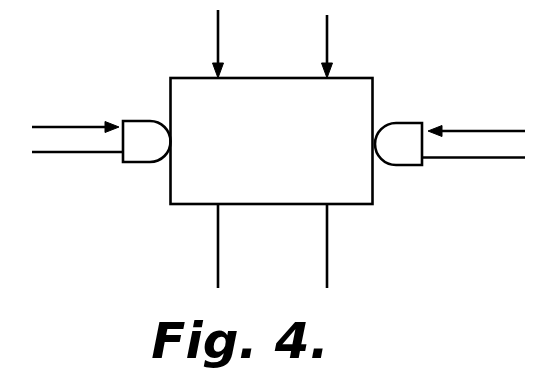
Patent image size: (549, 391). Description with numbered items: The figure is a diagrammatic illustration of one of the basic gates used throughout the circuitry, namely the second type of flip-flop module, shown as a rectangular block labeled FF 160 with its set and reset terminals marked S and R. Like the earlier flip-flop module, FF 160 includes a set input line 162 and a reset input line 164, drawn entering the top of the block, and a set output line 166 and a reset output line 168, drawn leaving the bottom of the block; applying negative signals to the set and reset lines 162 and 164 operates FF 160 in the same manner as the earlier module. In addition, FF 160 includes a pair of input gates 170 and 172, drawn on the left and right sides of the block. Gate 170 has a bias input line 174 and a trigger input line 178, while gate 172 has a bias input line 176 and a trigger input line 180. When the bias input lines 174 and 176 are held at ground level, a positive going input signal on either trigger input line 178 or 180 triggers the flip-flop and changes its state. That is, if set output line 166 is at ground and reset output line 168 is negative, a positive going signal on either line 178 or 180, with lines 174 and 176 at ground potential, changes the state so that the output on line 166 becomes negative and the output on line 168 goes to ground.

The flip-flop module 160 is at (283, 194).
The set input line 162 is at (216, 31).
The reset input line 164 is at (329, 36).
The set output line 166 is at (216, 242).
The reset output line 168 is at (329, 244).
The input gate 170 is at (141, 130).
The input gate 172 is at (402, 126).
The bias input line 174 is at (61, 157).
The bias input line 176 is at (460, 159).
The trigger input line 178 is at (46, 121).
The trigger input line 180 is at (477, 131).